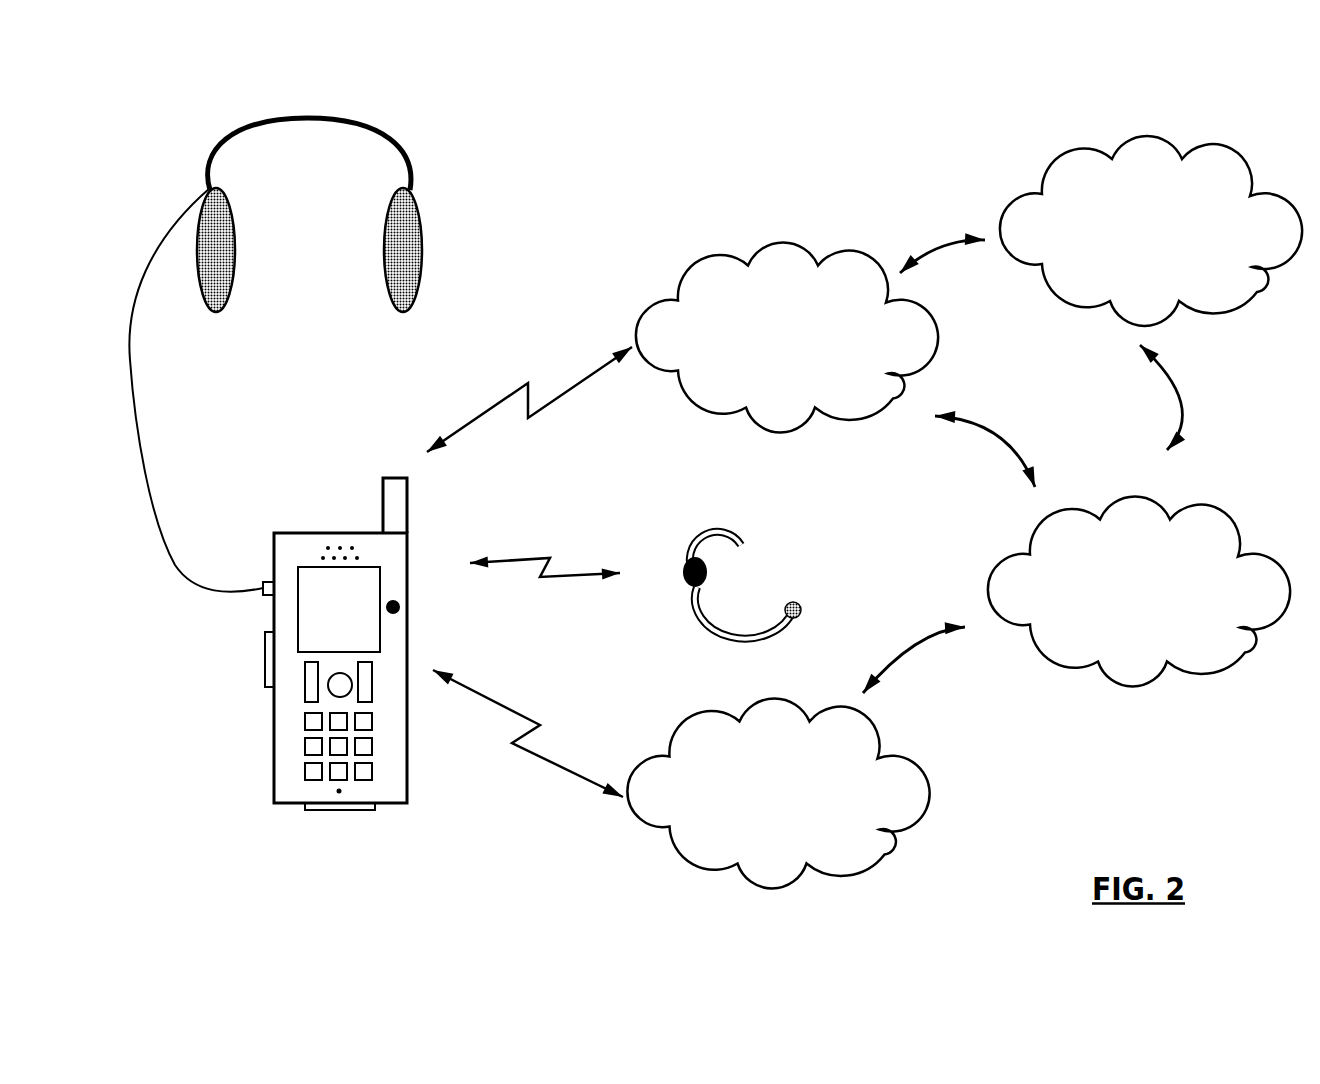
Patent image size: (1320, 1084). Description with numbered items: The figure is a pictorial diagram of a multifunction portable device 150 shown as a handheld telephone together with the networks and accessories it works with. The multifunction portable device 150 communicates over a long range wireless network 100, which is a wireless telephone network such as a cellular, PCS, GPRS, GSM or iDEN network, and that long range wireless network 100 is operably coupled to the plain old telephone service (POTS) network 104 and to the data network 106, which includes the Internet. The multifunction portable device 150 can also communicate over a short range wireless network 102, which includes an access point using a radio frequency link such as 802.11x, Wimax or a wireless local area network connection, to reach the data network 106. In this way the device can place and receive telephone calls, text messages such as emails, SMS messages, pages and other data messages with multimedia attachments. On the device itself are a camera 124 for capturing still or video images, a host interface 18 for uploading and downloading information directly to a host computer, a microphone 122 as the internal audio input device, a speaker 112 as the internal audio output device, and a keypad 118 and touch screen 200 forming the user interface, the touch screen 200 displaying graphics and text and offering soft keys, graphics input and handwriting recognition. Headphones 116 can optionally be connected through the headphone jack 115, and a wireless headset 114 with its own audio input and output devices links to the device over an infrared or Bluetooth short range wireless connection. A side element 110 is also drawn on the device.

The long range wireless network 100 is at (787, 337).
The short range wireless network 102 is at (778, 793).
The plain old telephone service (POTS) network 104 is at (1151, 231).
The data network 106 is at (1139, 591).
The side button 110 is at (265, 662).
The speaker 112 is at (311, 547).
The wireless headset 114 is at (717, 527).
The headphone jack 115 is at (265, 563).
The headphones 116 is at (413, 162).
The keypad 118 is at (385, 728).
The microphone 122 is at (361, 790).
The camera 124 is at (422, 605).
The multifunction portable device 150 is at (235, 752).
The host interface 18 is at (328, 812).
The touch screen 200 is at (348, 596).